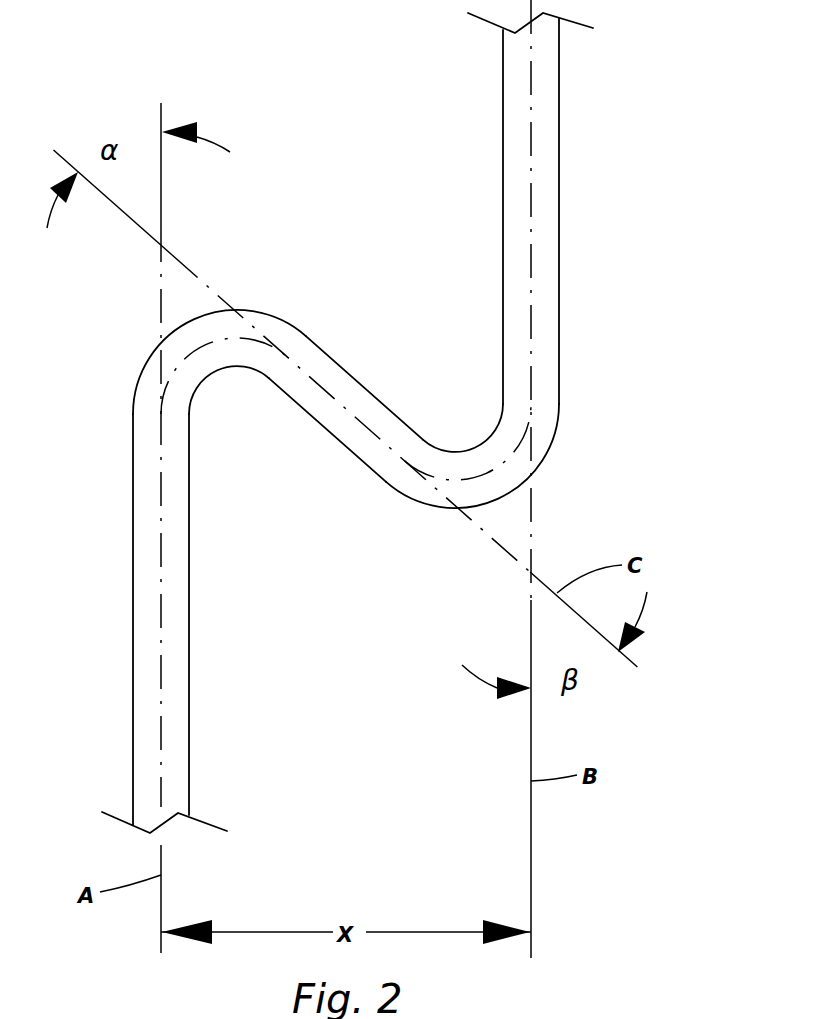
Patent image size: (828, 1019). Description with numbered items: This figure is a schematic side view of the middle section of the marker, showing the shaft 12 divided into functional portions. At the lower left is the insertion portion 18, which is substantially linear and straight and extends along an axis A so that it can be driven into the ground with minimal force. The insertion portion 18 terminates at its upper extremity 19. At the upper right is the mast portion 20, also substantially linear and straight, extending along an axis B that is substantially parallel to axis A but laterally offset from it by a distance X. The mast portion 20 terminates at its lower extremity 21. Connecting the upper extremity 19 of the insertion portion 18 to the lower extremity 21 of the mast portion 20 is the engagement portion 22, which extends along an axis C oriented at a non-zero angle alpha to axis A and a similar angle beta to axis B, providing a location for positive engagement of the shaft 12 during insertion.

The shaft 12 is at (358, 423).
The insertion portion 18 is at (148, 615).
The upper extremity 19 is at (152, 380).
The mast portion 20 is at (548, 212).
The lower extremity 21 is at (542, 432).
The engagement portion 22 is at (347, 422).